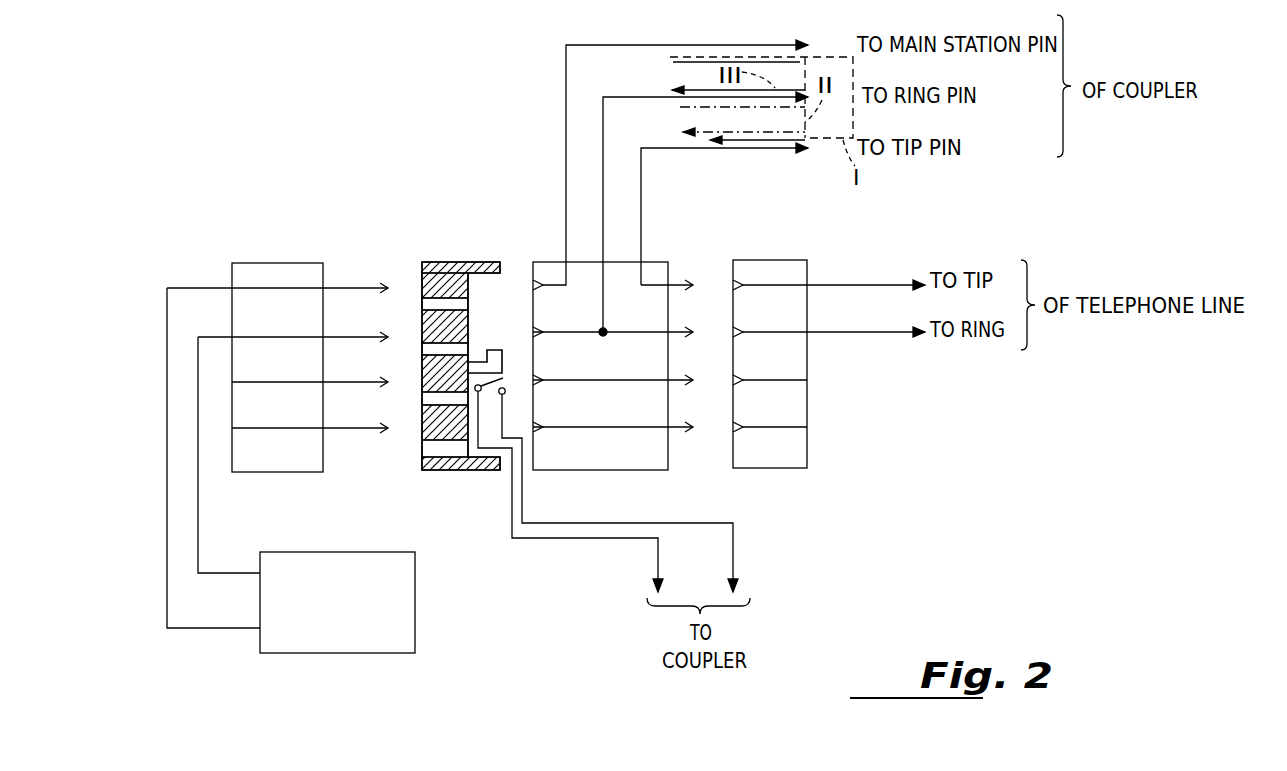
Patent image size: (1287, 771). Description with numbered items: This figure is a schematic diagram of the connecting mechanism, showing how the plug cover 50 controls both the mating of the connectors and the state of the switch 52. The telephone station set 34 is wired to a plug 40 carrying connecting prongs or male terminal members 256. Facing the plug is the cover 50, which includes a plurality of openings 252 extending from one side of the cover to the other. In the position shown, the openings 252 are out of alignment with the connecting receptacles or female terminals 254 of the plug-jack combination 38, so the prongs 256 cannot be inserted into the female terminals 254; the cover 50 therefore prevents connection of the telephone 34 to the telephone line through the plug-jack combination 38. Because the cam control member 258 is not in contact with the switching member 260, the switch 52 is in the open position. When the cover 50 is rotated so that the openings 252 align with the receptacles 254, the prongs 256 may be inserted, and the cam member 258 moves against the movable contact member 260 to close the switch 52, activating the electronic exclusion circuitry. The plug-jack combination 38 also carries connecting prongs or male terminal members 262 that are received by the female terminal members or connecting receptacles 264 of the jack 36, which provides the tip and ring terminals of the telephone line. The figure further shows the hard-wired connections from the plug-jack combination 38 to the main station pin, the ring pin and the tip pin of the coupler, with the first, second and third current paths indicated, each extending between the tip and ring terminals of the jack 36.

The telephone station set 34 is at (400, 630).
The jack 36 is at (800, 455).
The plug-jack combination 38 is at (600, 472).
The plug 40 is at (252, 262).
The plug cover 50 is at (444, 262).
The switch 52 is at (536, 363).
The openings 252 is at (437, 303).
The female terminals 254 is at (540, 292).
The male terminal members 256 is at (343, 290).
The cam control member 258 is at (491, 349).
The switching member 260 is at (506, 382).
The male terminal members 262 is at (677, 290).
The female terminal members 264 is at (740, 292).